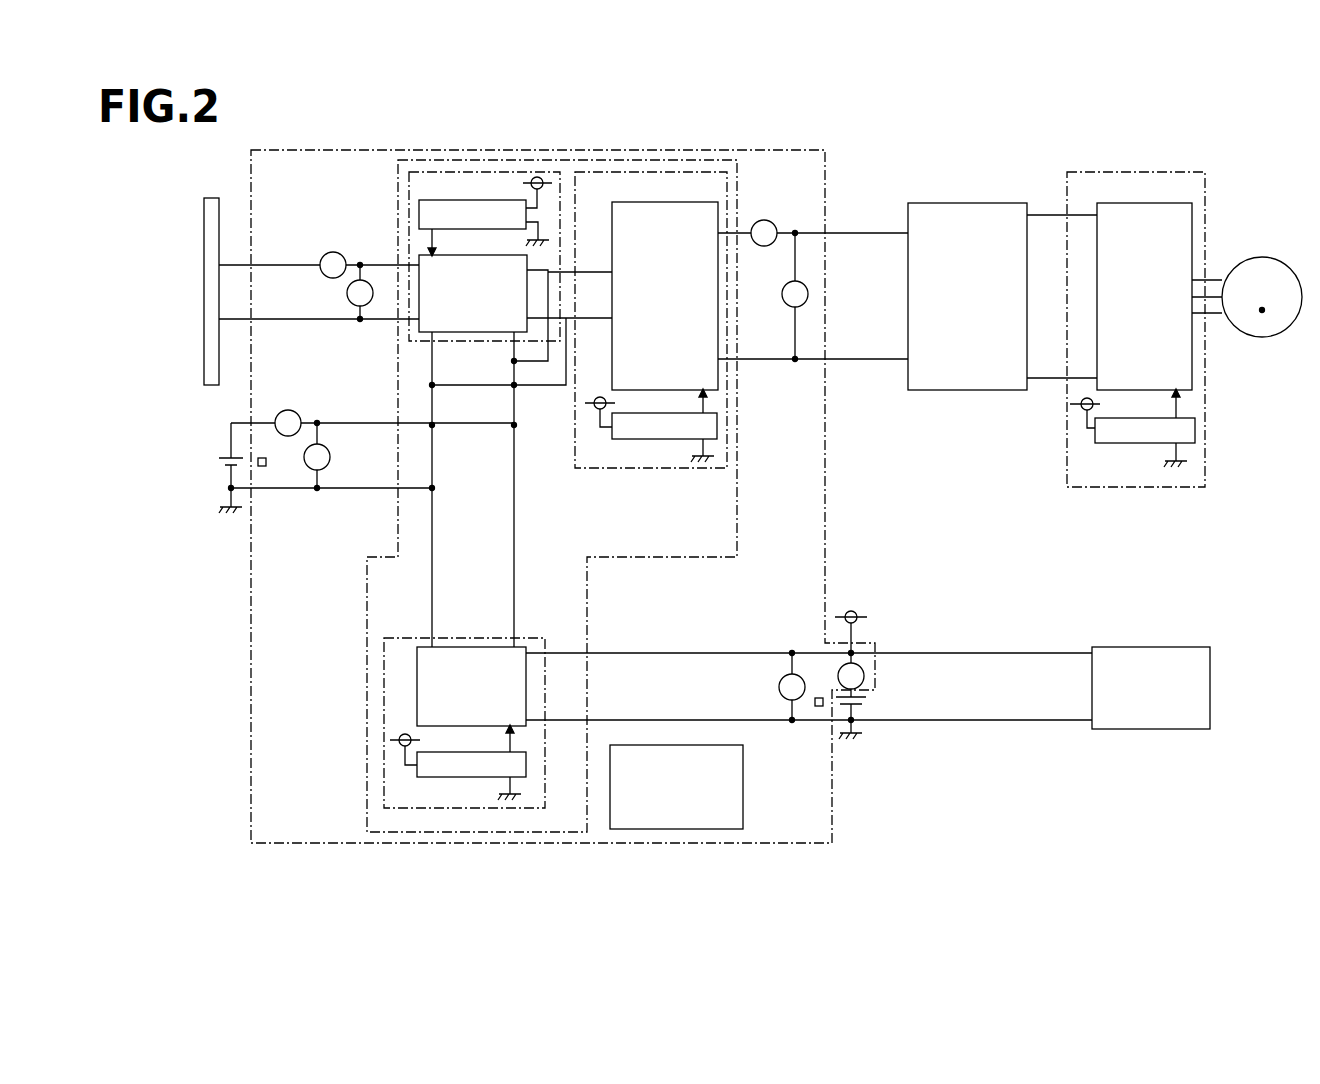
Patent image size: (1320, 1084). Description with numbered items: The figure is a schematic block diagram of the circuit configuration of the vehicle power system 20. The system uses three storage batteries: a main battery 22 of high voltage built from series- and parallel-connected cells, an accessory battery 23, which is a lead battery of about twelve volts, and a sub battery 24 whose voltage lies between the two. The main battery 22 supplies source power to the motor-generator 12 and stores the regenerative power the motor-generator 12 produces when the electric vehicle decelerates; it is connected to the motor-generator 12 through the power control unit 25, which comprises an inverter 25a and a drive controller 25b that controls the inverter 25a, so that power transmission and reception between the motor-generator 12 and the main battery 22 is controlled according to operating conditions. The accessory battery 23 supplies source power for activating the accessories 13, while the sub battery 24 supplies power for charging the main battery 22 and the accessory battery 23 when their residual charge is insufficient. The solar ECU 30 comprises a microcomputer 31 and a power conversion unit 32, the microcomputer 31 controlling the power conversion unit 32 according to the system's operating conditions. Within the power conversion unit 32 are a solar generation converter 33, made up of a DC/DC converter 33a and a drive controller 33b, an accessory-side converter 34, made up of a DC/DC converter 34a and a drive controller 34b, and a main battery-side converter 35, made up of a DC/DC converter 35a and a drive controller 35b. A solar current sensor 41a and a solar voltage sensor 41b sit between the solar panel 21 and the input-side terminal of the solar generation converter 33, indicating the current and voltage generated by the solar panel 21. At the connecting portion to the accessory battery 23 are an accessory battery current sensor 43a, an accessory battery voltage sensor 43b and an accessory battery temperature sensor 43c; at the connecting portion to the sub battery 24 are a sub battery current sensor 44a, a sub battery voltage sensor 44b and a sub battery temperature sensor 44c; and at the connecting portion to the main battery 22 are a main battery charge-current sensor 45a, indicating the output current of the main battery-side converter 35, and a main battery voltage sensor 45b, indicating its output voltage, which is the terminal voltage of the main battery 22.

The vehicle power system 20 is at (1298, 107).
The motor-generator 12 is at (1281, 270).
The accessories 13 is at (1210, 690).
The solar panel 21 is at (212, 198).
The main battery 22 is at (1012, 203).
The accessory battery 23 is at (868, 704).
The sub battery 24 is at (217, 463).
The power control unit 25 is at (1172, 173).
The inverter 25a is at (1192, 215).
The drive controller 25b is at (1195, 428).
The solar ECU 30 is at (832, 790).
The microcomputer 31 is at (675, 830).
The power conversion unit 32 is at (385, 845).
The solar generation converter 33 is at (507, 172).
The DC/DC converter 33a is at (414, 330).
The drive controller 33b is at (419, 210).
The accessory-side converter 34 is at (384, 660).
The DC/DC converter 34a is at (417, 700).
The drive controller 34b is at (470, 778).
The main battery-side converter 35 is at (713, 160).
The DC/DC converter 35a is at (672, 202).
The drive controller 35b is at (663, 440).
The solar current sensor 41a is at (322, 256).
The solar voltage sensor 41b is at (347, 293).
The accessory battery current sensor 43a is at (865, 680).
The accessory battery voltage sensor 43b is at (779, 685).
The accessory battery temperature sensor 43c is at (819, 707).
The sub battery current sensor 44a is at (292, 408).
The sub battery voltage sensor 44b is at (331, 459).
The sub battery temperature sensor 44c is at (262, 466).
The main battery charge-current sensor 45a is at (766, 220).
The main battery voltage sensor 45b is at (785, 306).